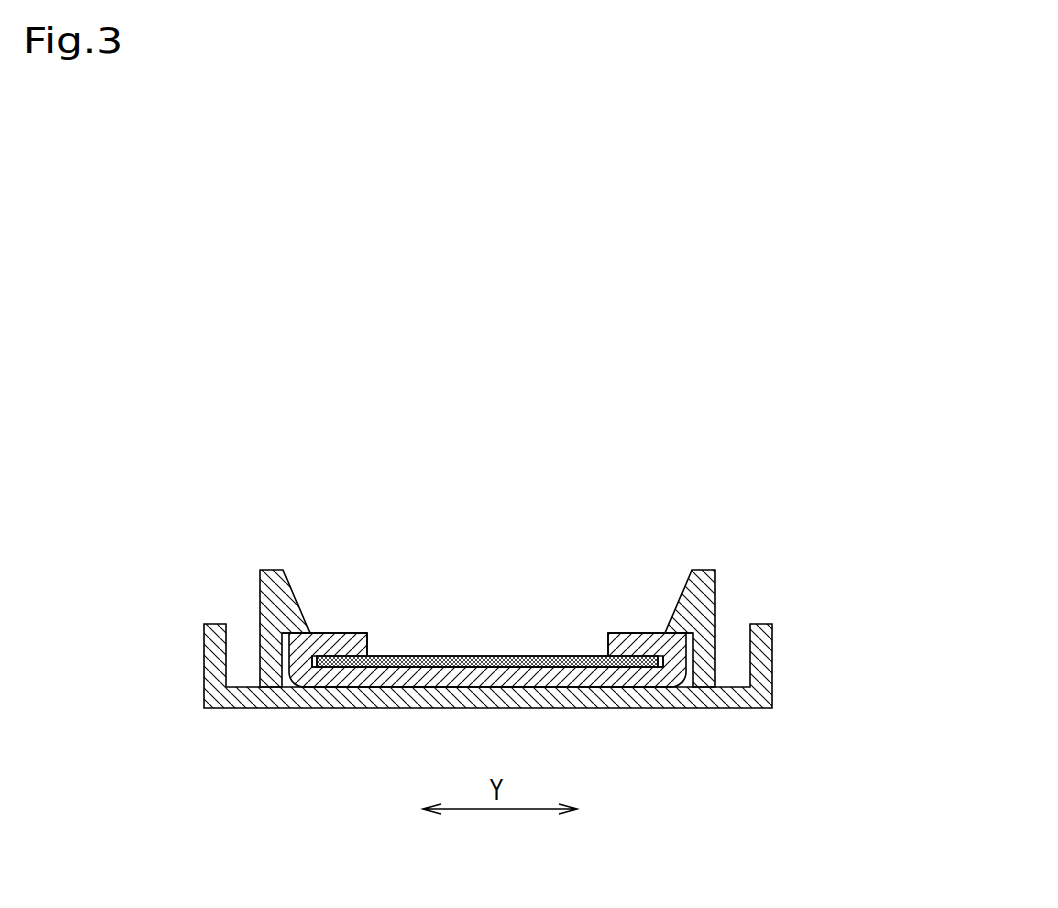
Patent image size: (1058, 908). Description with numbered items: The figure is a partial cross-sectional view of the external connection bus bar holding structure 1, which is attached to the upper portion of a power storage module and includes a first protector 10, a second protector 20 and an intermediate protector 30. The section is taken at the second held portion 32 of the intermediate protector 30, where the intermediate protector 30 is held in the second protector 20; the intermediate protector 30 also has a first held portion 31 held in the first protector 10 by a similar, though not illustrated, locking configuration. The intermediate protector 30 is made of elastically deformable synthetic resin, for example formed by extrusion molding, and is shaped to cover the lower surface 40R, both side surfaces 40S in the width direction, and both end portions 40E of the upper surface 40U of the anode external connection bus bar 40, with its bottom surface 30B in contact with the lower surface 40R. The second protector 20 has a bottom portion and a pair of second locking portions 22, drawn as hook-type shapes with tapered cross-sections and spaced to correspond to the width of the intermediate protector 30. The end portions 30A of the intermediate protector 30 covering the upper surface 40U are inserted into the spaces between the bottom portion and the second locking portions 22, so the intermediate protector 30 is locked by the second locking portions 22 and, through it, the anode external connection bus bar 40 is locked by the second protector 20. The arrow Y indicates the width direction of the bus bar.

The external connection bus bar holding structure 1 is at (472, 490).
The first protector 10 is at (538, 653).
The second protector 20 is at (788, 635).
The second locking portion 22 is at (300, 586).
The intermediate protector 30 is at (637, 603).
The end portion of the intermediate protector 30A is at (348, 645).
The bottom surface of the intermediate protector 30B is at (402, 682).
The first held portion 31 is at (511, 532).
The second held portion 32 is at (320, 628).
The anode external connection bus bar 40 is at (421, 651).
The upper surface of the anode external connection bus bar 40U is at (487, 655).
The lower surface of the anode external connection bus bar 40R is at (557, 663).
The end portion of the upper surface 40E is at (335, 653).
The side surface of the anode external connection bus bar 40S is at (312, 665).